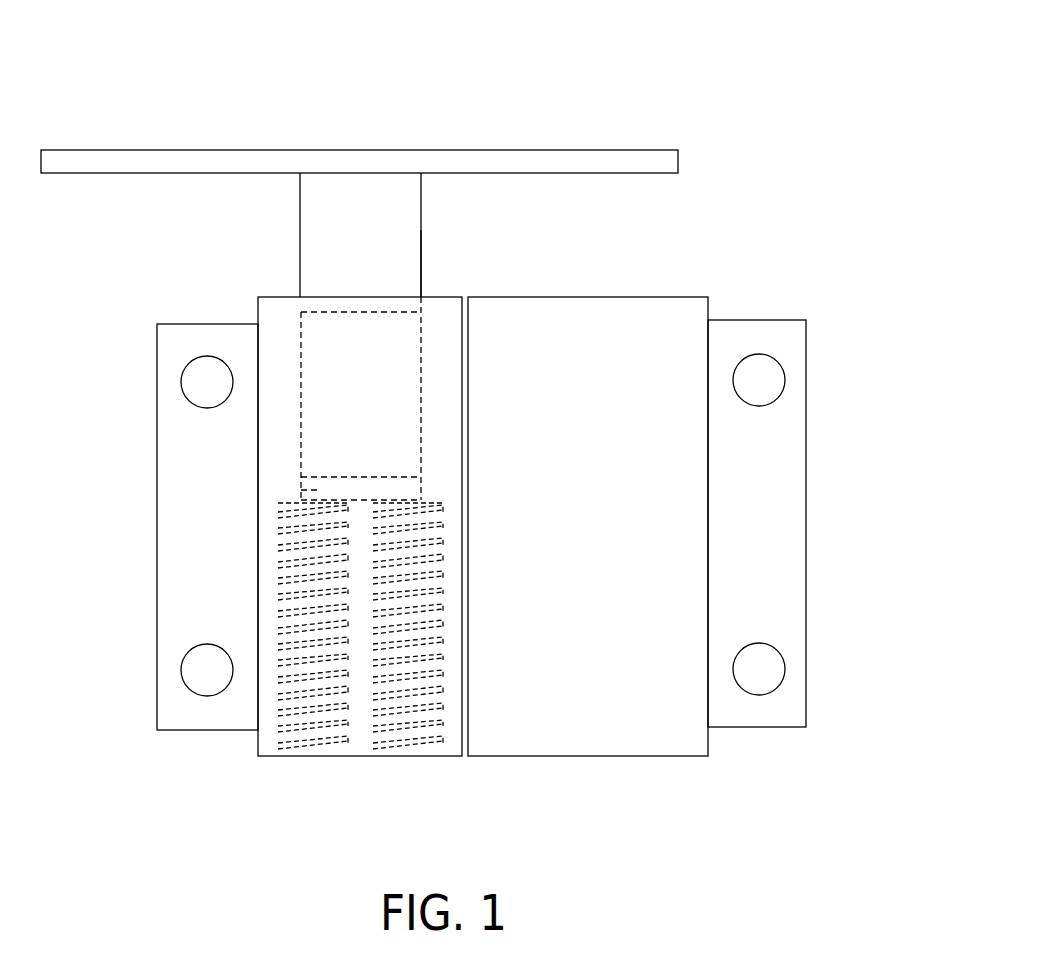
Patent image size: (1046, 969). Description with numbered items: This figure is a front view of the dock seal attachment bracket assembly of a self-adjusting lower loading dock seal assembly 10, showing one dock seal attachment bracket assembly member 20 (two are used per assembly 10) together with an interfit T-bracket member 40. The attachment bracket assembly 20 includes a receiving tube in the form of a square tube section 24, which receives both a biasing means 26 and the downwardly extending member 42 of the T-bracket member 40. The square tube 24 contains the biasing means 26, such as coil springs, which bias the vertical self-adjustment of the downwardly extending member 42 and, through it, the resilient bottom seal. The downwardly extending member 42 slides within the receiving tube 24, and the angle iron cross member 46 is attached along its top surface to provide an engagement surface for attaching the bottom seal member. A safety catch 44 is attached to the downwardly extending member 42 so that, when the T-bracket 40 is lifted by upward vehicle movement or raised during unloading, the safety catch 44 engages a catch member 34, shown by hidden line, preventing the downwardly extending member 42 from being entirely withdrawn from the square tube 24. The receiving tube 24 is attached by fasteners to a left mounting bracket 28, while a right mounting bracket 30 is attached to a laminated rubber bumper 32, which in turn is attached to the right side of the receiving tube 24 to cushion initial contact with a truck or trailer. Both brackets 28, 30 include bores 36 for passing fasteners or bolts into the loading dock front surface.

The self-adjusting lower loading dock seal assembly 10 is at (753, 143).
The dock seal attachment bracket assembly member 20 is at (140, 763).
The square tube section 24 is at (258, 298).
The biasing means 26 is at (305, 748).
The left mounting bracket 28 is at (185, 584).
The right mounting bracket 30 is at (780, 568).
The laminated rubber bumper 32 is at (632, 318).
The catch member 34 is at (301, 307).
The bores 36 is at (181, 383).
The T-bracket member 40 is at (432, 207).
The downwardly extending member 42 is at (421, 265).
The safety catch 44 is at (317, 490).
The angle iron cross member 46 is at (562, 150).